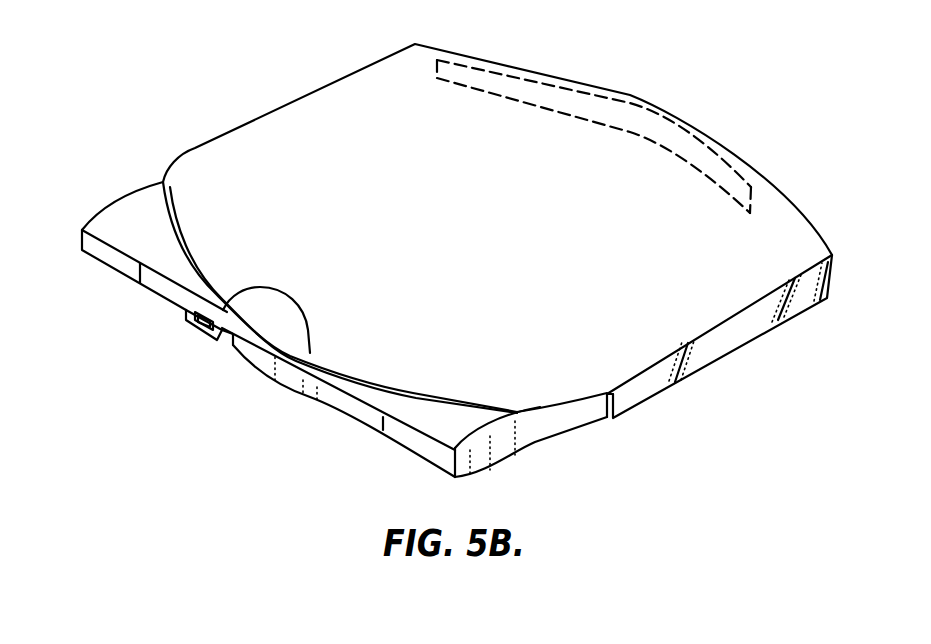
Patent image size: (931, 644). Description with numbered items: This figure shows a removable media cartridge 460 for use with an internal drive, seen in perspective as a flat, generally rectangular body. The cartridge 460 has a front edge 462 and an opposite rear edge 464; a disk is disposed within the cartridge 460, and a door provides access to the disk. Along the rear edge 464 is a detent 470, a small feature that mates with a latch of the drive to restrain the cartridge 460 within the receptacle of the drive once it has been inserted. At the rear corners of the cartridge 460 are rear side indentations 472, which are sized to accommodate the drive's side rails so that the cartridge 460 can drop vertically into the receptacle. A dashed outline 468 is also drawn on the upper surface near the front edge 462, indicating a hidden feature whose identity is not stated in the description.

The cartridge 460 is at (182, 64).
The front edge 462 is at (670, 111).
The rear edge 464 is at (357, 418).
The hidden pocket region 468 is at (504, 82).
The detent 470 is at (198, 330).
The rear side indentations 472 is at (145, 174).